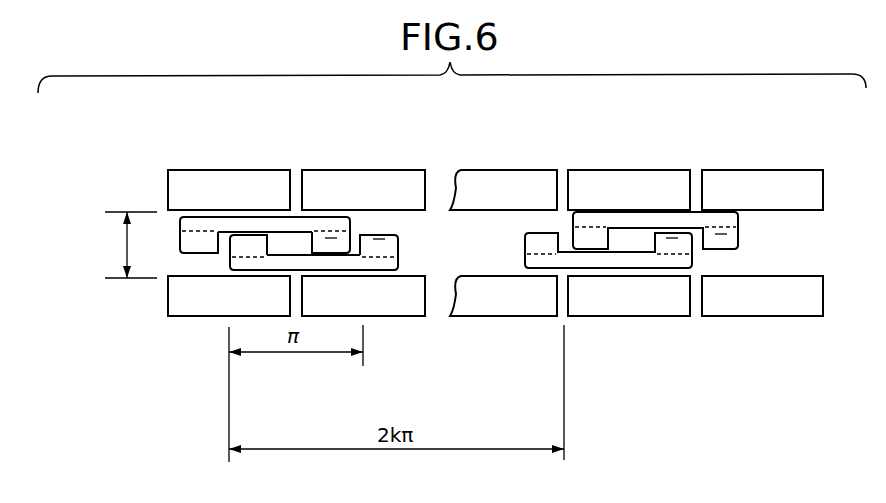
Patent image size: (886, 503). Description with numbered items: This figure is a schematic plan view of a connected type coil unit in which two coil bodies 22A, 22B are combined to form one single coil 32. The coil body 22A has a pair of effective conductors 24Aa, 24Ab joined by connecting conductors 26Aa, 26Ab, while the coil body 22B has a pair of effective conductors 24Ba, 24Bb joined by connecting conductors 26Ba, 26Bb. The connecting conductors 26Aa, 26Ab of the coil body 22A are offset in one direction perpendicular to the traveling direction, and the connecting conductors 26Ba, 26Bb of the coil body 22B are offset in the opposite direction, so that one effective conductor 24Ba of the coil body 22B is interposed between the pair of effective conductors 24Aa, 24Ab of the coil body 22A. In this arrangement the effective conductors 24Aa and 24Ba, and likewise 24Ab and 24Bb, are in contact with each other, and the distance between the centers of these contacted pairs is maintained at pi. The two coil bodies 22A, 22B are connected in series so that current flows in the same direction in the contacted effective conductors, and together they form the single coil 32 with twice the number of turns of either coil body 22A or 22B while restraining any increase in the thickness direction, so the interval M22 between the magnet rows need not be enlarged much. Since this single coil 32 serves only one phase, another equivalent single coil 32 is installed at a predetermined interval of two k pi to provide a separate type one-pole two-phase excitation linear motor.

The single coil 32 is at (256, 198).
The coil body 22A is at (272, 217).
The coil body 22B is at (319, 286).
The effective conductor 24Aa is at (188, 242).
The effective conductor 24Ab is at (338, 221).
The connecting conductor 26Aa is at (307, 223).
The connecting conductor 26Ab is at (547, 185).
The effective conductor 24Ba is at (237, 266).
The effective conductor 24Bb is at (387, 263).
The connecting conductor 26Ba is at (290, 265).
The connecting conductor 26Bb is at (464, 330).
The interval between the magnet rows M22 is at (115, 245).